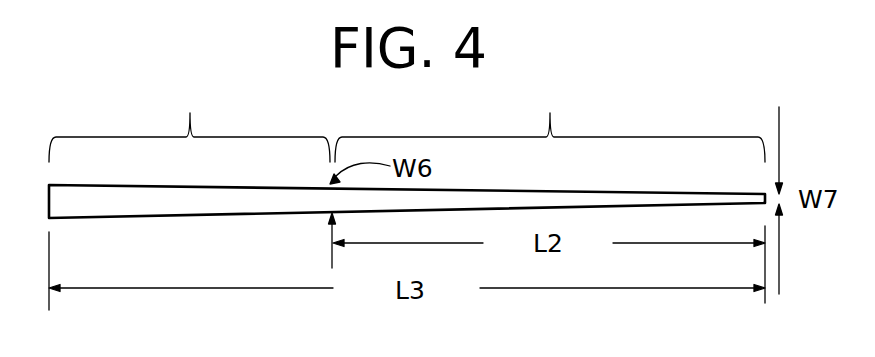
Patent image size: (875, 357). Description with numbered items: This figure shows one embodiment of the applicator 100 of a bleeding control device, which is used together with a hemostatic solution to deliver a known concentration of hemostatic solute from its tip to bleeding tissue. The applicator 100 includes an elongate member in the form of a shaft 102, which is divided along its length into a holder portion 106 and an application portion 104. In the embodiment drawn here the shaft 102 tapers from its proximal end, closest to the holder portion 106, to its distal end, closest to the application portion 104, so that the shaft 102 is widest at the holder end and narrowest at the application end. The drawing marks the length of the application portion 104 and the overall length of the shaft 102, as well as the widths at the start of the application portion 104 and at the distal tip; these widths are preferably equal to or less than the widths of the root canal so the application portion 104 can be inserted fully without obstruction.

The applicator 100 is at (742, 54).
The shaft 102 is at (221, 219).
The application portion 104 is at (550, 118).
The holder portion 106 is at (189, 118).